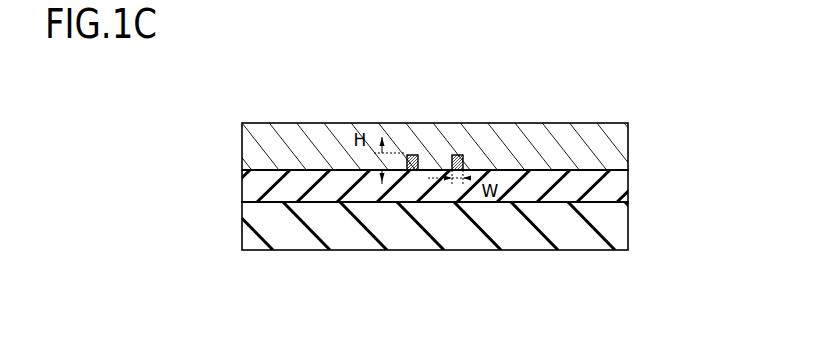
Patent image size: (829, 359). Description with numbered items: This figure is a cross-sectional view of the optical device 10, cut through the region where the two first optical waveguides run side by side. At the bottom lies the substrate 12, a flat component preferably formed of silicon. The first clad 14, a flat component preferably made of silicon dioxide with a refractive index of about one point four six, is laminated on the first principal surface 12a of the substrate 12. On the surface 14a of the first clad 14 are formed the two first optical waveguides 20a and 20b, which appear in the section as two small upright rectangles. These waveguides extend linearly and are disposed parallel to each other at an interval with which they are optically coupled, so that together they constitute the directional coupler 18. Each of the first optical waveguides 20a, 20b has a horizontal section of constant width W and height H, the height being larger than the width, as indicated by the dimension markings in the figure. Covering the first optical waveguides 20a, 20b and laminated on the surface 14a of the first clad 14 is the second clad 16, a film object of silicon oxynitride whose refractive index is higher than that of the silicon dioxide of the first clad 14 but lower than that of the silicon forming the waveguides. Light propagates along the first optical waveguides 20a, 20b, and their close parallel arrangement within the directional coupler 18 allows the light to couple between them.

The optical device 10 is at (553, 95).
The substrate 12 is at (618, 225).
The first principal surface 12a is at (587, 200).
The first clad 14 is at (618, 183).
The surface 14a is at (537, 168).
The second clad 16 is at (622, 143).
The directional coupler 18 is at (383, 85).
The first optical waveguide 20a is at (412, 155).
The first optical waveguide 20b is at (457, 155).